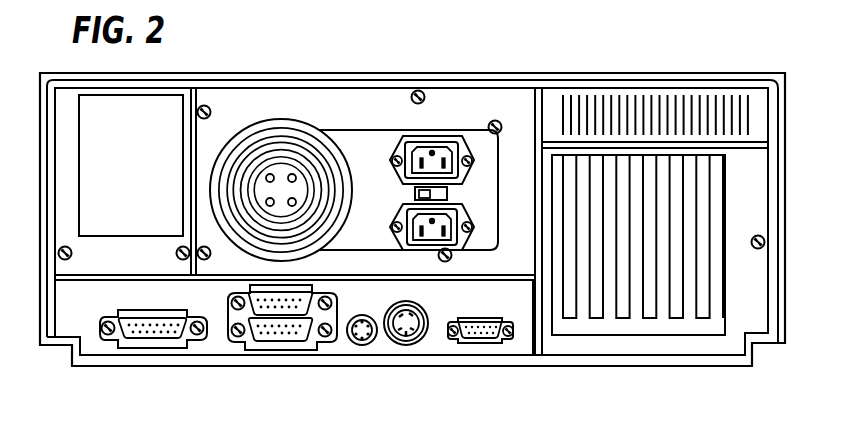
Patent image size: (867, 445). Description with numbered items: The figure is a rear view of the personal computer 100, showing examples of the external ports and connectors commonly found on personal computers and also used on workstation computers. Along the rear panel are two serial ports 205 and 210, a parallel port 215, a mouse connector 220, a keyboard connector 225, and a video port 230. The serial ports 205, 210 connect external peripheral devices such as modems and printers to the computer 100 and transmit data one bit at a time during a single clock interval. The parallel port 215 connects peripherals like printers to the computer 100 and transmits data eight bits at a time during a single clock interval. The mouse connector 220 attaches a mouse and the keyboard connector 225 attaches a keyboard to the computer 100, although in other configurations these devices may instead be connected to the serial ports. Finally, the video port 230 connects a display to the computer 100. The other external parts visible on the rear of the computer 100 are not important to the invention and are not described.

The computer 100 is at (585, 73).
The serial port 205 is at (157, 348).
The serial port 210 is at (236, 338).
The parallel port 215 is at (292, 351).
The mouse connector 220 is at (367, 346).
The keyboard connector 225 is at (403, 345).
The video port 230 is at (468, 343).